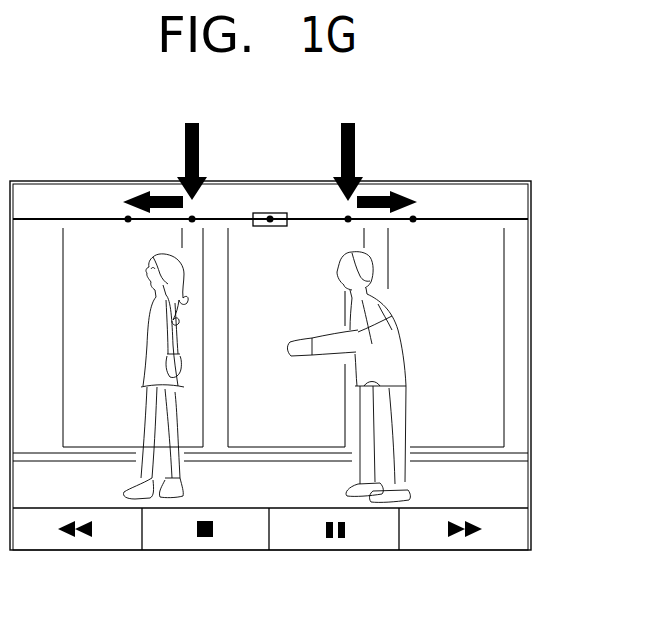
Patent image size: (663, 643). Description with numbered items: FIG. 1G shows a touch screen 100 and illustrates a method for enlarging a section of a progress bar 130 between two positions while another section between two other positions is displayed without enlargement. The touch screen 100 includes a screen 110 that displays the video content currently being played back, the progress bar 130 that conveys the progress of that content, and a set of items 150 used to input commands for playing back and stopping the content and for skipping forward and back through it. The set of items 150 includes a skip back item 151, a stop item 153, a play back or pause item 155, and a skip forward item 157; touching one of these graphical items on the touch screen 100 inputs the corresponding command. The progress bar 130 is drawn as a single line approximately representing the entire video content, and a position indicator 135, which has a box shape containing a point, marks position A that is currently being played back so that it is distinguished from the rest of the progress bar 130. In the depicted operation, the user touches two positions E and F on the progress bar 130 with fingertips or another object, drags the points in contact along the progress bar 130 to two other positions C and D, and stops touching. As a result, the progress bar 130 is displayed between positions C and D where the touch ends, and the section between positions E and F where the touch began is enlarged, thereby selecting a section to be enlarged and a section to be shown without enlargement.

The touch screen 100 is at (67, 130).
The screen 110 is at (482, 341).
The progress bar 130 is at (441, 218).
The position indicator 135 is at (280, 213).
The set of items 150 is at (432, 508).
The skip back item 151 is at (87, 550).
The stop item 153 is at (205, 550).
The play back or pause item 155 is at (341, 550).
The skip forward item 157 is at (460, 550).